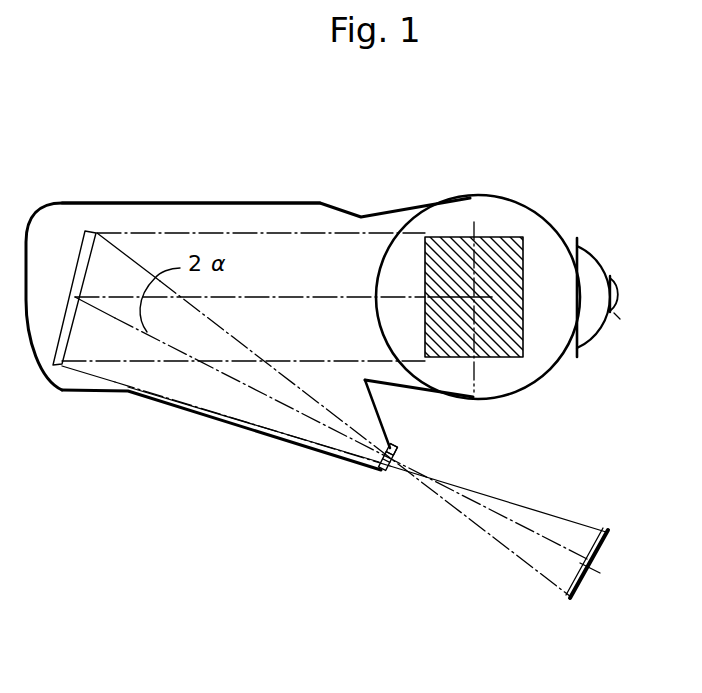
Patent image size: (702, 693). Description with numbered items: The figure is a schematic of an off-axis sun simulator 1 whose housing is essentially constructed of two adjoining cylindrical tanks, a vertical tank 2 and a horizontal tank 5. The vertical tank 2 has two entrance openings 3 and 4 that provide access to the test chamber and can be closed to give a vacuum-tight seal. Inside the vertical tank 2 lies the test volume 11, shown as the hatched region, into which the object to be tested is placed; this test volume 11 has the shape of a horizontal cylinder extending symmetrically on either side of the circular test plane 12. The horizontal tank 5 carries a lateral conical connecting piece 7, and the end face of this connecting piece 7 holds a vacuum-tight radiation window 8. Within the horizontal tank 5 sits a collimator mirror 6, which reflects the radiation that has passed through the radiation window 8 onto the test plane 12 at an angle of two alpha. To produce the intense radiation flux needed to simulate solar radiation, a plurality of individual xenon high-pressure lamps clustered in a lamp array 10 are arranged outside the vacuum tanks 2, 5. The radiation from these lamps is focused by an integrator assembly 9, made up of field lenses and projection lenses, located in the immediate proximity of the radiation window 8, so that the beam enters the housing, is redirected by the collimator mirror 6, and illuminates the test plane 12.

The spectral measuring device 1 is at (329, 186).
The vertical tank 2 is at (546, 222).
The entrance opening 3 is at (578, 240).
The entrance opening 4 is at (606, 279).
The horizontal tank 5 is at (140, 203).
The collimator mirror 6 is at (63, 392).
The conical connecting piece 7 is at (247, 430).
The radiation window 8 is at (378, 470).
The integrator assembly 9 is at (398, 453).
The lamp array 10 is at (572, 600).
The test volume 11 is at (497, 237).
The test plane 12 is at (476, 373).